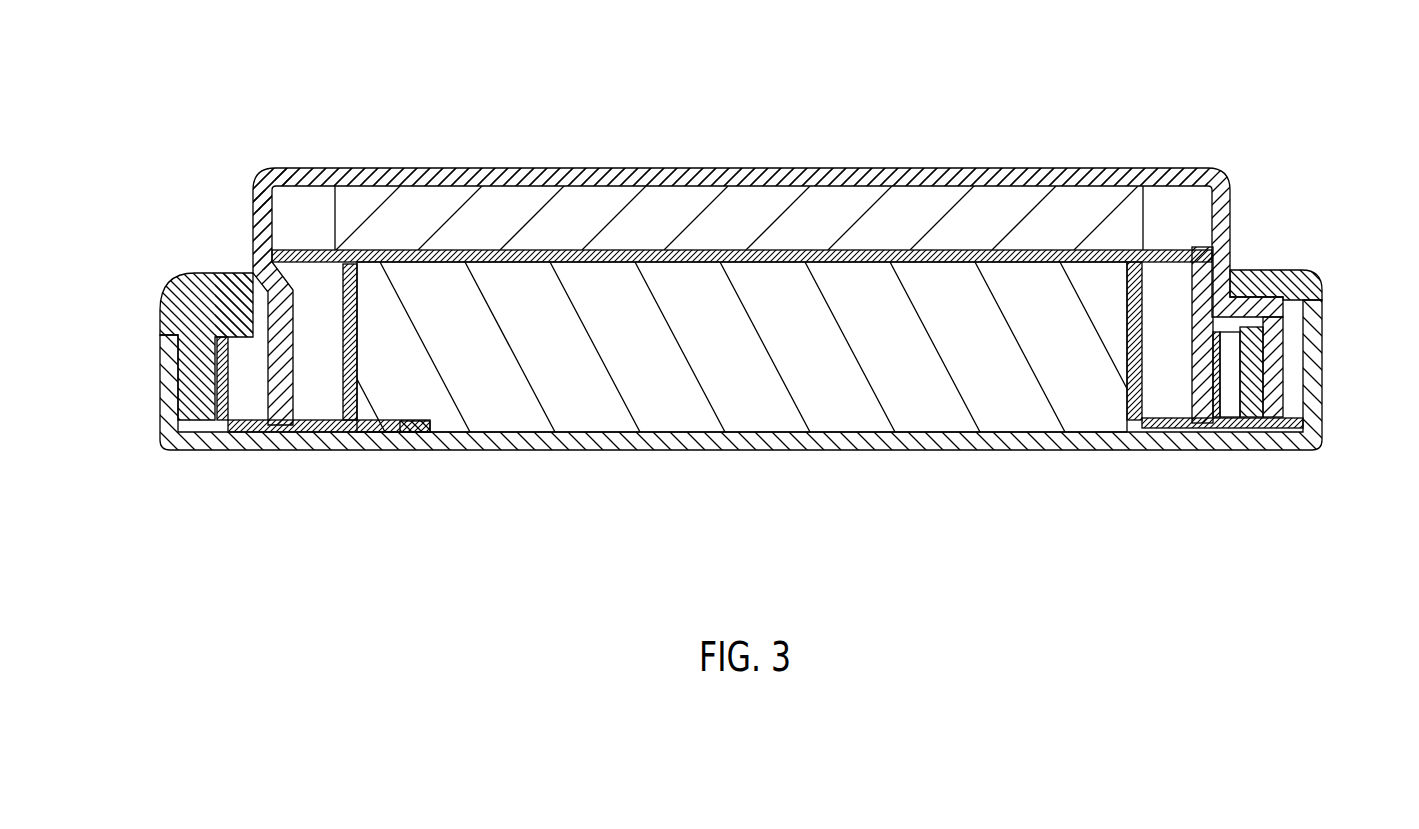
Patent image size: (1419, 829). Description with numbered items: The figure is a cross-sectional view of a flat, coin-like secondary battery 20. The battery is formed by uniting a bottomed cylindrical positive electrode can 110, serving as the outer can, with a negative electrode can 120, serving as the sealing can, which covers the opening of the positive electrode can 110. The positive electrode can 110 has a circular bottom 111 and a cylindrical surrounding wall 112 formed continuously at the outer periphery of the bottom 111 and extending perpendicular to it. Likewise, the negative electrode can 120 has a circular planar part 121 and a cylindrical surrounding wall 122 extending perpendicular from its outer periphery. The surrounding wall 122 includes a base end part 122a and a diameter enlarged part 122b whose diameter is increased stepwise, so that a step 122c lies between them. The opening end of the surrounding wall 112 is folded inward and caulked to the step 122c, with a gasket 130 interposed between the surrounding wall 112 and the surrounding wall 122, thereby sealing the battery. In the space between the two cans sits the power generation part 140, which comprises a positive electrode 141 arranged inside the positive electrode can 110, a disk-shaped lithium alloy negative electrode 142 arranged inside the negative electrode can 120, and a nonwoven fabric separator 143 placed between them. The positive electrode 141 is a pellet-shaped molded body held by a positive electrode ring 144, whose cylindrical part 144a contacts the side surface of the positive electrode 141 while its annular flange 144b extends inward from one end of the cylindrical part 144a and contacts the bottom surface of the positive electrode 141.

The secondary battery 20 is at (743, 295).
The positive electrode can 110 is at (704, 434).
The bottom 111 is at (480, 450).
The surrounding wall 112 is at (165, 385).
The negative electrode can 120 is at (680, 241).
The planar part 121 is at (688, 168).
The surrounding wall 122 is at (250, 240).
The base end part 122a is at (250, 210).
The diameter enlarged part 122b is at (170, 302).
The step 122c is at (185, 273).
The gasket 130 is at (1320, 302).
The power generation part 140 is at (765, 312).
The positive electrode 141 is at (770, 412).
The negative electrode 142 is at (927, 210).
The separator 143 is at (775, 250).
The positive electrode ring 144 is at (1150, 400).
The cylindrical part 144a is at (343, 365).
The annular flange 144b is at (375, 440).